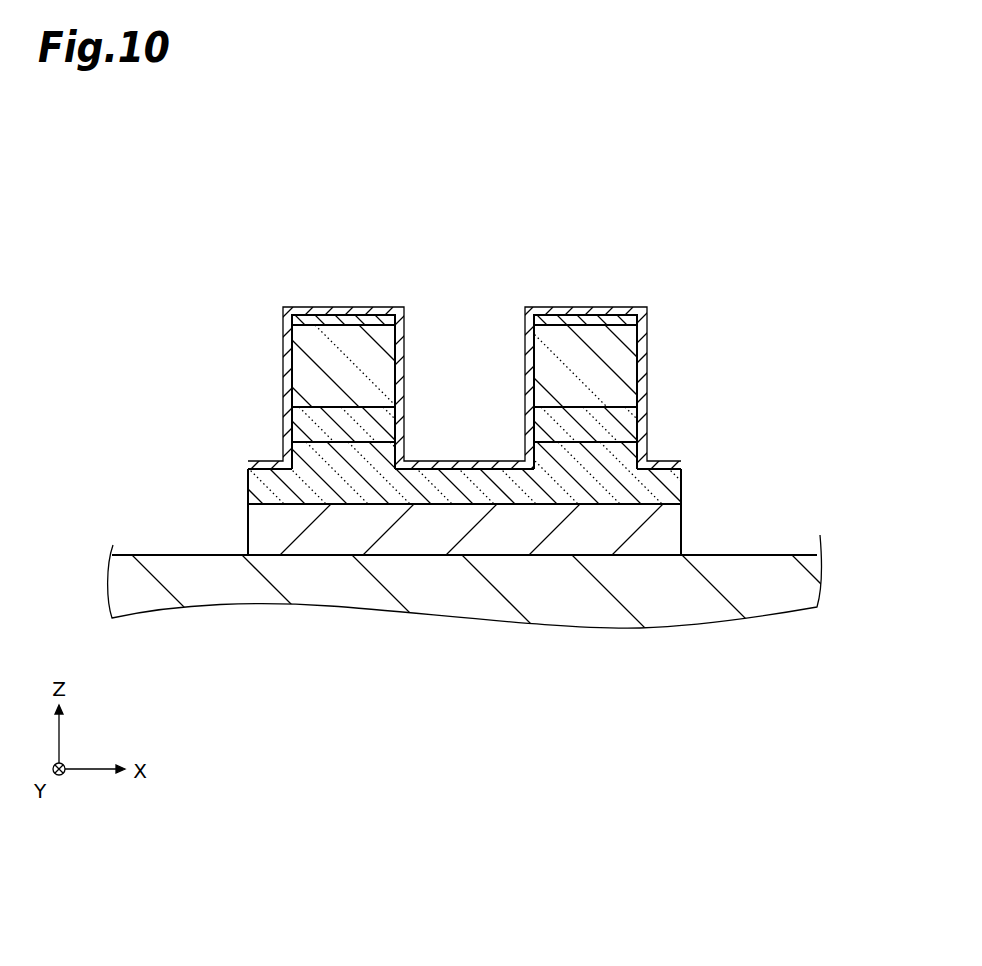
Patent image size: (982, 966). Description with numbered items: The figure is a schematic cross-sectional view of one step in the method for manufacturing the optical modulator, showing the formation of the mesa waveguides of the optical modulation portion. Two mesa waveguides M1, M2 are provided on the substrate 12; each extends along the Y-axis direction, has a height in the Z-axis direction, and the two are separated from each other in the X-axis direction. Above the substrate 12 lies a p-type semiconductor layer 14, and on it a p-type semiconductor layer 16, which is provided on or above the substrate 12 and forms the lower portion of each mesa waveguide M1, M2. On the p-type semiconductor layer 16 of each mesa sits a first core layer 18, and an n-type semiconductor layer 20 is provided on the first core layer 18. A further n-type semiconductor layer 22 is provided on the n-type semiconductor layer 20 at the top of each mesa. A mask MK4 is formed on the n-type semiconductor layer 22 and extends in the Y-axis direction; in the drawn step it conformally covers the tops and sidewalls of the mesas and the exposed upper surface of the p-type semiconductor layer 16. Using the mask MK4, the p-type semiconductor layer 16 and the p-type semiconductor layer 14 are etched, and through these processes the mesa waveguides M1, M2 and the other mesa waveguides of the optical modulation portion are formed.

The substrate 12 is at (795, 572).
The p-type semiconductor layer 14 is at (660, 532).
The p-type semiconductor layer 16 is at (660, 488).
The first core layer 18 is at (372, 423).
The n-type semiconductor layer 20 is at (368, 366).
The n-type semiconductor layer 22 is at (378, 318).
The mask MK4 is at (311, 308).
The mesa waveguide M1 is at (279, 332).
The mesa waveguide M2 is at (655, 332).